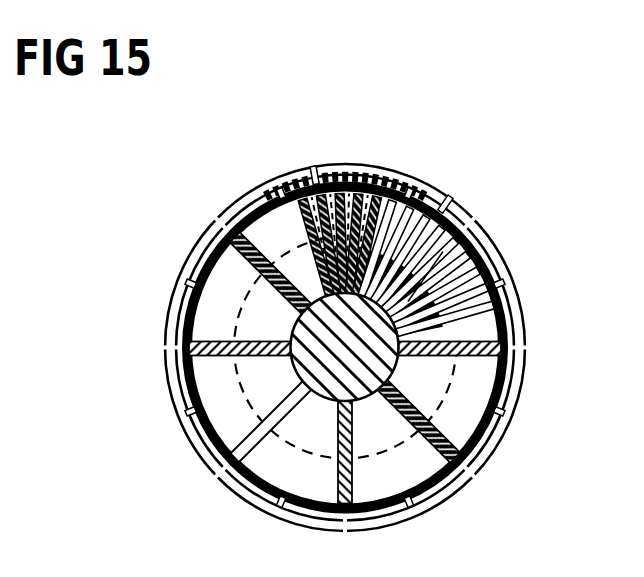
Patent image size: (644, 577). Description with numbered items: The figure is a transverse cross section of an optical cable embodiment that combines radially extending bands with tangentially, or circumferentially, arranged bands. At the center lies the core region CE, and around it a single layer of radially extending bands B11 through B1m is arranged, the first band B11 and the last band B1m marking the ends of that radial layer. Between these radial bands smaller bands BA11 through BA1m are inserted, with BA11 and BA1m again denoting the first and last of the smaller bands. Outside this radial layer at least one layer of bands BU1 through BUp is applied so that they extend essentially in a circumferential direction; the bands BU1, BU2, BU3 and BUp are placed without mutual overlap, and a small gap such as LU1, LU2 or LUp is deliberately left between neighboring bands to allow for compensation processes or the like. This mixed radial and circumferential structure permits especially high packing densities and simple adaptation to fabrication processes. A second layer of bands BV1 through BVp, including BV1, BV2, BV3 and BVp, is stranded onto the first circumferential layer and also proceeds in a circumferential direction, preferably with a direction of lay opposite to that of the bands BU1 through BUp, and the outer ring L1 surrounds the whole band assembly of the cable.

The second layer band BVp is at (297, 166).
The smaller band BA1m is at (350, 165).
The circumferential band BU1 is at (370, 166).
The radially extending band B11 is at (393, 180).
The gap LU1 is at (420, 190).
The radially extending band B1m is at (286, 183).
The gap LUp is at (267, 177).
The circumferential band BUp is at (230, 212).
The smaller band BA11 is at (447, 197).
The second layer band BV1 is at (472, 212).
The circumferential band BU2 is at (483, 270).
The gap LU2 is at (510, 282).
The second layer band BV2 is at (517, 313).
The circumferential band BU3 is at (520, 343).
The ring L1 is at (518, 394).
The second layer band BV3 is at (512, 418).
The center CE is at (298, 372).